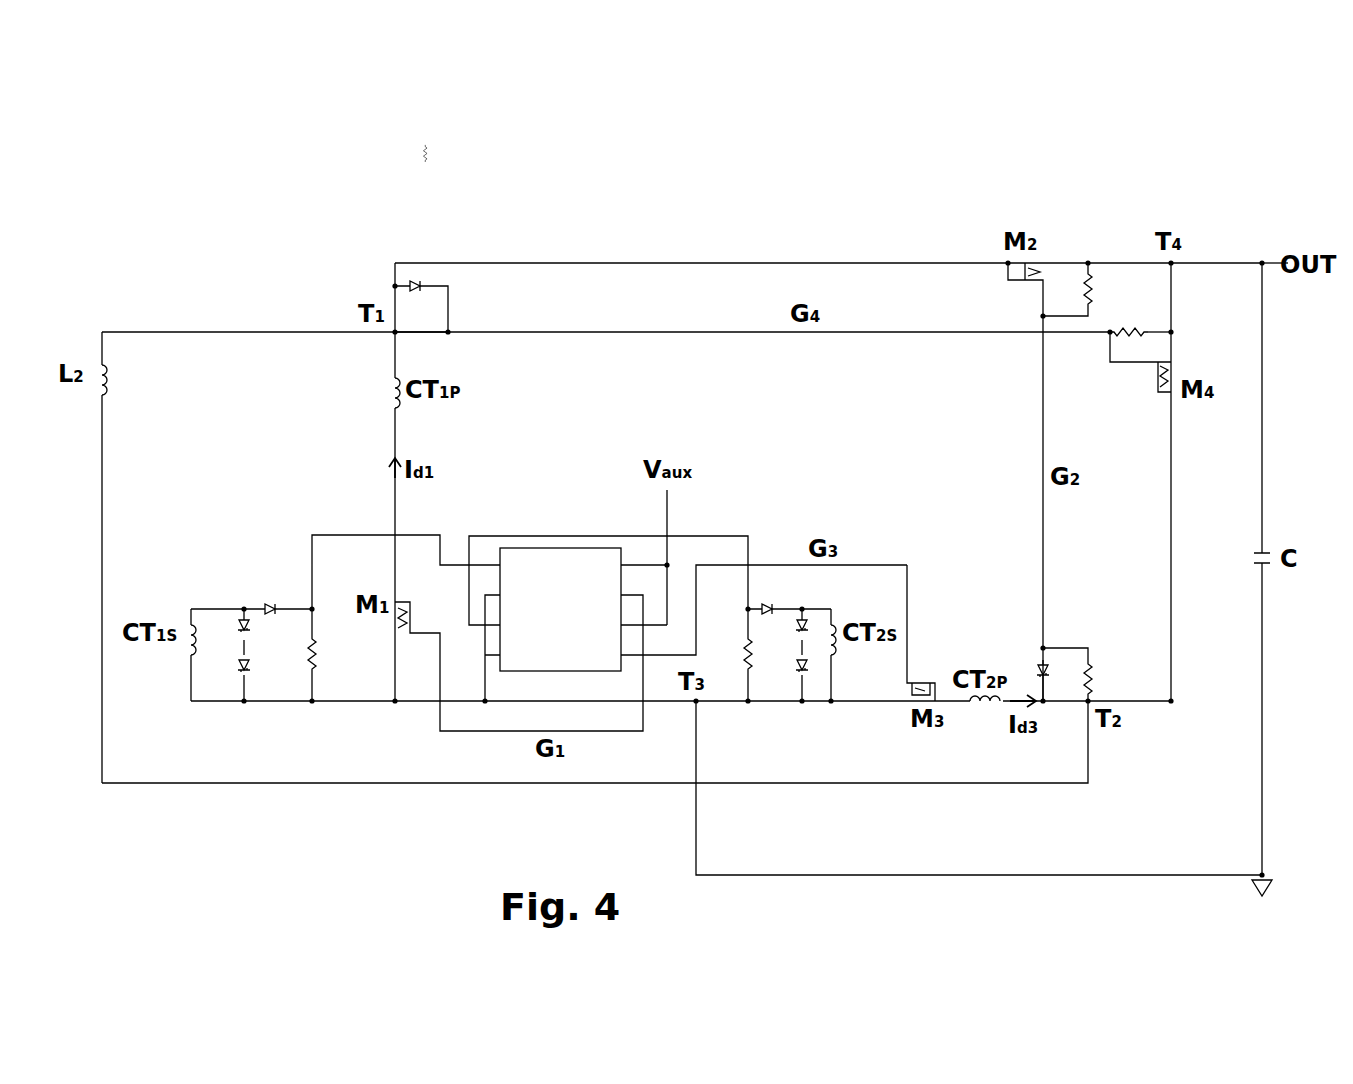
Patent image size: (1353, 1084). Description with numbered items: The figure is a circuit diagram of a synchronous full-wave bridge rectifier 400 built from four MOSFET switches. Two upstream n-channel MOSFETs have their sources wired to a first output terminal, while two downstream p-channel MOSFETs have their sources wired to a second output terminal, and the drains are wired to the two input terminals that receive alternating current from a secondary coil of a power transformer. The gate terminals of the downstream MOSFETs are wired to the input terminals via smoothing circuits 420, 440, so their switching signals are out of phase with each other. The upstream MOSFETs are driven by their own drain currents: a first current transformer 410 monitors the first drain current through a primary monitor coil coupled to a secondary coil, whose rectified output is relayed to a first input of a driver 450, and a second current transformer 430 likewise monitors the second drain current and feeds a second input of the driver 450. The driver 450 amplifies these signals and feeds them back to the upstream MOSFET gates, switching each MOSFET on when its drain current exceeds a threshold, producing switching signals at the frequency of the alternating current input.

The synchronous full-wave bridge rectifier 400 is at (1186, 128).
The first current transformer 410 is at (206, 724).
The smoothing circuit 420 is at (1072, 640).
The second current transformer 430 is at (810, 724).
The smoothing circuit 440 is at (378, 278).
The driver 450 is at (551, 543).